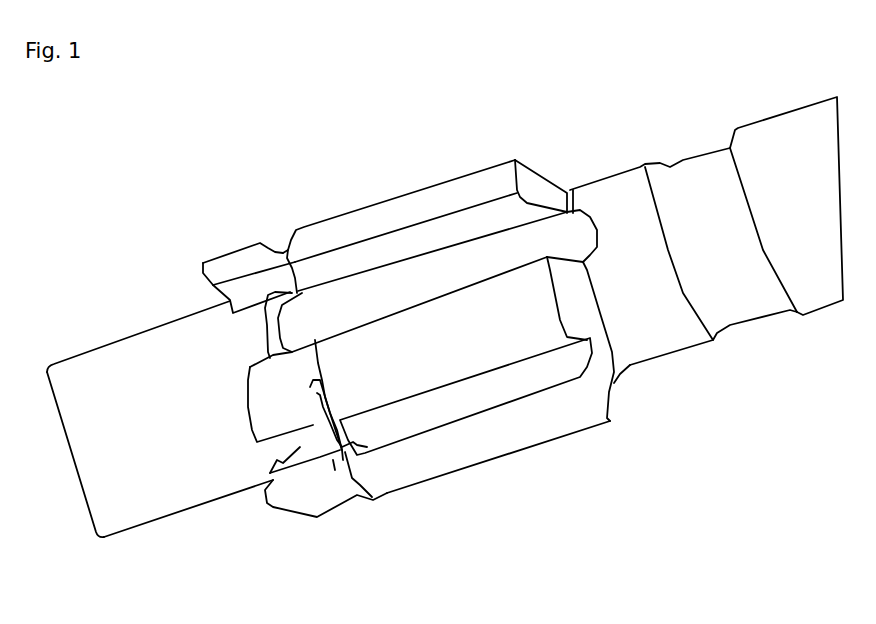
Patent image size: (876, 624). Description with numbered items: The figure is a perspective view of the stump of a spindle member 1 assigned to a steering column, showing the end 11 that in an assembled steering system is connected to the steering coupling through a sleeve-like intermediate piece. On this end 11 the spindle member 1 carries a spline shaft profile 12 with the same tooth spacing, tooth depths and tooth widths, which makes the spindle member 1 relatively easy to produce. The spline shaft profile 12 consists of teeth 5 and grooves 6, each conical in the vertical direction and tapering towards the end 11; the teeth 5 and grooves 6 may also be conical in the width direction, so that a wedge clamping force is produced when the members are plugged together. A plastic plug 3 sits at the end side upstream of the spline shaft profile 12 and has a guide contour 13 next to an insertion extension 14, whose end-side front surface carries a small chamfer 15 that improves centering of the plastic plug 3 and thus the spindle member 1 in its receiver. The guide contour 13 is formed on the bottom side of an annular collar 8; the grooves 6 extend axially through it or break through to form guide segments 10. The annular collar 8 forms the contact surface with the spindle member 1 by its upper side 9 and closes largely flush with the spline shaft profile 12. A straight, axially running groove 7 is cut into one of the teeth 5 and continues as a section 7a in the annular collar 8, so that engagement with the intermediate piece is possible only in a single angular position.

The spindle member 1 is at (746, 125).
The plastic plug 3 is at (190, 511).
The teeth 5 is at (350, 231).
The grooves 6 is at (407, 273).
The straight groove 7 is at (540, 370).
The section of the straight groove 7a is at (270, 483).
The annular collar 8 is at (347, 493).
The upper side 9 is at (370, 497).
The guide segments 10 is at (297, 513).
The end 11 is at (507, 495).
The spline shaft profile 12 is at (490, 167).
The guide contour 13 is at (194, 271).
The insertion extension 14 is at (148, 357).
The chamfer 15 is at (60, 440).